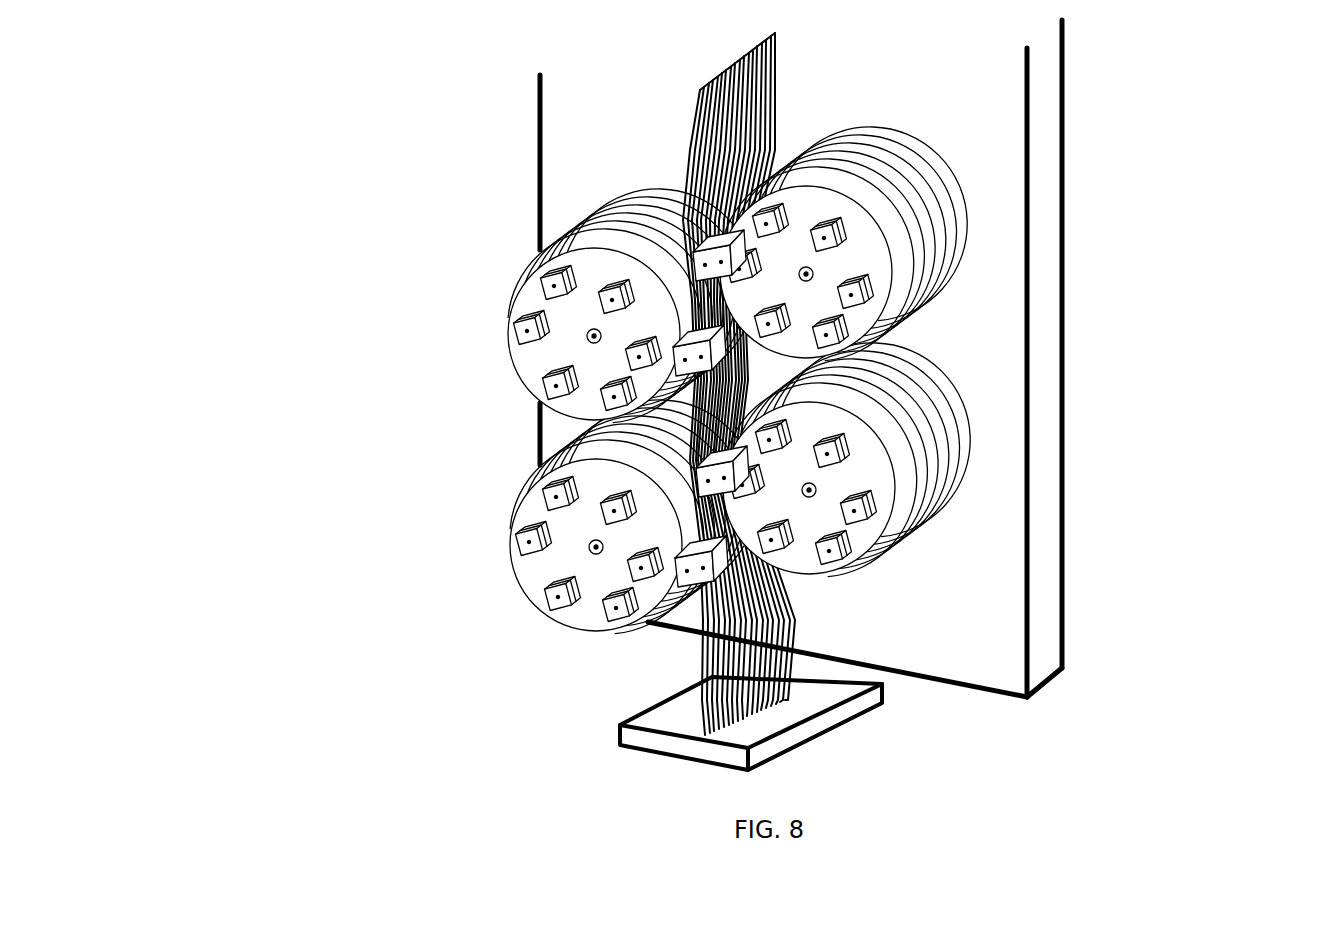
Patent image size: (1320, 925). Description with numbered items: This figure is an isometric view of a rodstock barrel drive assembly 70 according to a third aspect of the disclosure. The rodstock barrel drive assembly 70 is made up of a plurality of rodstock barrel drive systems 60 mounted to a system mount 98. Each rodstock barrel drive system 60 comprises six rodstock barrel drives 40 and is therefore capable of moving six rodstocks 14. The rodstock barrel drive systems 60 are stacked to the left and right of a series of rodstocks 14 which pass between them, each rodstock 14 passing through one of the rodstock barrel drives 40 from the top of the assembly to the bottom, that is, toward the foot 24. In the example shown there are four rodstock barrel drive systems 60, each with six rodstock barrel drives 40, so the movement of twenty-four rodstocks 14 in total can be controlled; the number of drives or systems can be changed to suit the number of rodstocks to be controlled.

The rodstock barrel drive assembly 70 is at (423, 160).
The rodstock 14 is at (780, 107).
The rodstock barrel drive 40 is at (910, 273).
The rodstock barrel drive system 60 is at (775, 380).
The system mount 98 is at (1062, 551).
The foot 24 is at (620, 732).